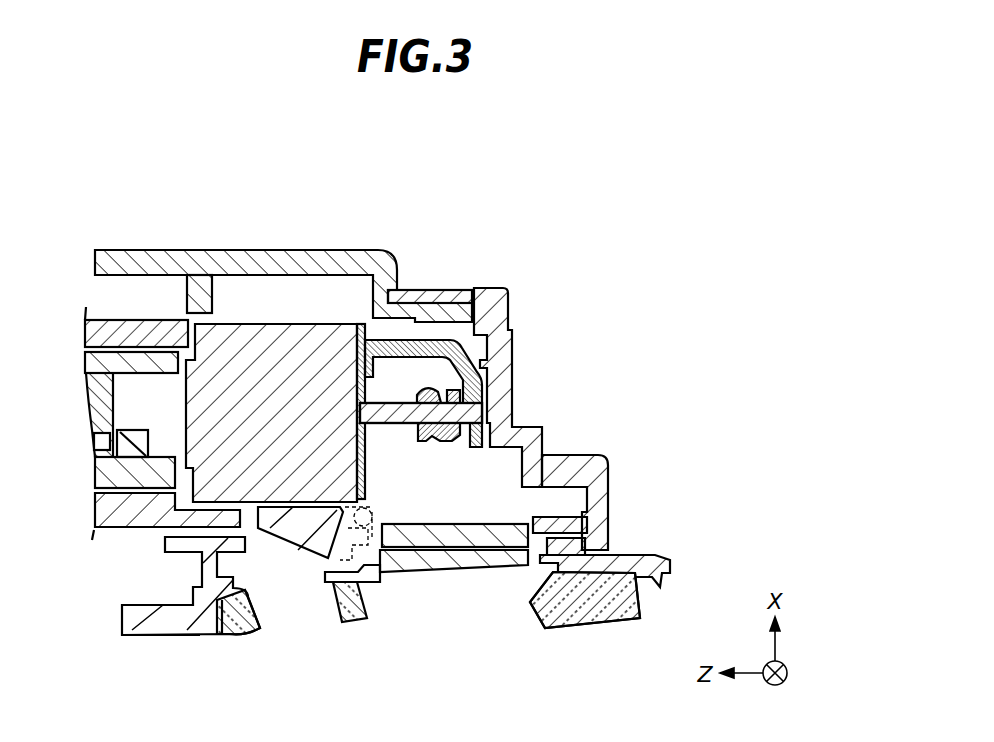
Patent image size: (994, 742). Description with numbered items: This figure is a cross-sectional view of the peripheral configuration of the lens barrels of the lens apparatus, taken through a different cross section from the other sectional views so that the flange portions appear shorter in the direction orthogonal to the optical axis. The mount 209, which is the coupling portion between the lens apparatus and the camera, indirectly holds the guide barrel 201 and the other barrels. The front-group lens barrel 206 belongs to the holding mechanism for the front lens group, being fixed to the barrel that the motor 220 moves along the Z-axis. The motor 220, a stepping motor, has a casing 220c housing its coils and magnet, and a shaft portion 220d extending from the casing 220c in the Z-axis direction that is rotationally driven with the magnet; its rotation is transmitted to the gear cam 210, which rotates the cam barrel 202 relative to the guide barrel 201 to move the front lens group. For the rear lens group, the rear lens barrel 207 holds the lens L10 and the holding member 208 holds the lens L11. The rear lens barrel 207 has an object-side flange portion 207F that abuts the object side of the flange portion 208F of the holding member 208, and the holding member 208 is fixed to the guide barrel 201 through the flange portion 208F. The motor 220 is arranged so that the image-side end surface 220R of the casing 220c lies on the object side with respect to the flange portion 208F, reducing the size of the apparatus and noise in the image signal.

The guide barrel 201 is at (140, 513).
The cam barrel 202 is at (165, 457).
The 1C lens barrel 206 is at (207, 600).
The 2A lens barrel 207 is at (393, 560).
The flange portion 207F is at (332, 533).
The 2B lens barrel 208 is at (483, 535).
The flange portion 208F is at (392, 520).
The mount 209 is at (567, 473).
The gear cam 210 is at (124, 366).
The motor 220 is at (297, 187).
The casing 220c is at (278, 356).
The end surface 220R is at (367, 390).
The shaft portion 220d is at (446, 404).
The lens L10 is at (350, 626).
The lens L11 is at (597, 612).